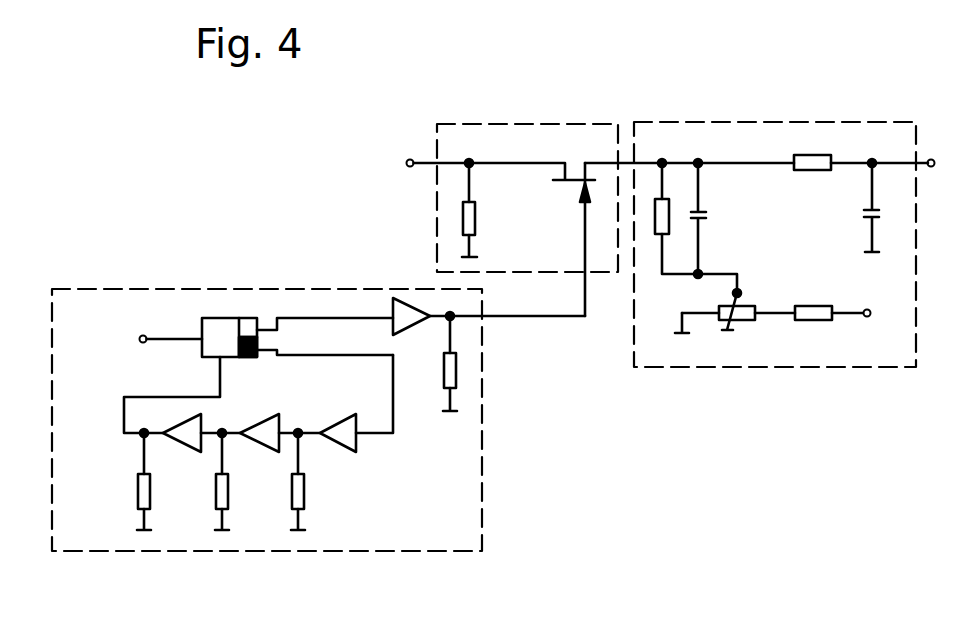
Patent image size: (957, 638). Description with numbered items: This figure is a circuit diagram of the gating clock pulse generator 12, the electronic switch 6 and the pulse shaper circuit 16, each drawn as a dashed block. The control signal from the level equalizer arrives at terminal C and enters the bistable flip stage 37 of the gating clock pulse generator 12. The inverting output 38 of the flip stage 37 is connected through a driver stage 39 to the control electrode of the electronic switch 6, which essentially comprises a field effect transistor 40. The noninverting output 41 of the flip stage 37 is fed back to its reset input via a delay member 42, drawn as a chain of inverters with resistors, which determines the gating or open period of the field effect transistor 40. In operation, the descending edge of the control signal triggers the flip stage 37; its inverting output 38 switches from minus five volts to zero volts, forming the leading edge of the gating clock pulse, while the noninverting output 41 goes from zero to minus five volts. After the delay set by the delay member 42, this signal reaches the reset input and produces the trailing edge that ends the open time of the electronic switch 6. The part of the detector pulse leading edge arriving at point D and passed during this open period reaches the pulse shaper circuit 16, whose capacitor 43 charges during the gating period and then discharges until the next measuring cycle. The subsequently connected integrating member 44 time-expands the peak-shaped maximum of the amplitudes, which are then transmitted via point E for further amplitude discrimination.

The electronic switch 6 is at (511, 136).
The gating clock pulse generator 12 is at (457, 535).
The pulse shaper circuit 16 is at (810, 354).
The bistable flip stage 37 is at (208, 330).
The inverting output 38 is at (262, 330).
The driver stage 39 is at (409, 318).
The field effect transistor 40 is at (580, 182).
The noninverting output 41 is at (268, 357).
The delay member 42 is at (337, 432).
The capacitor 43 is at (706, 215).
The integrating member 44 is at (864, 212).